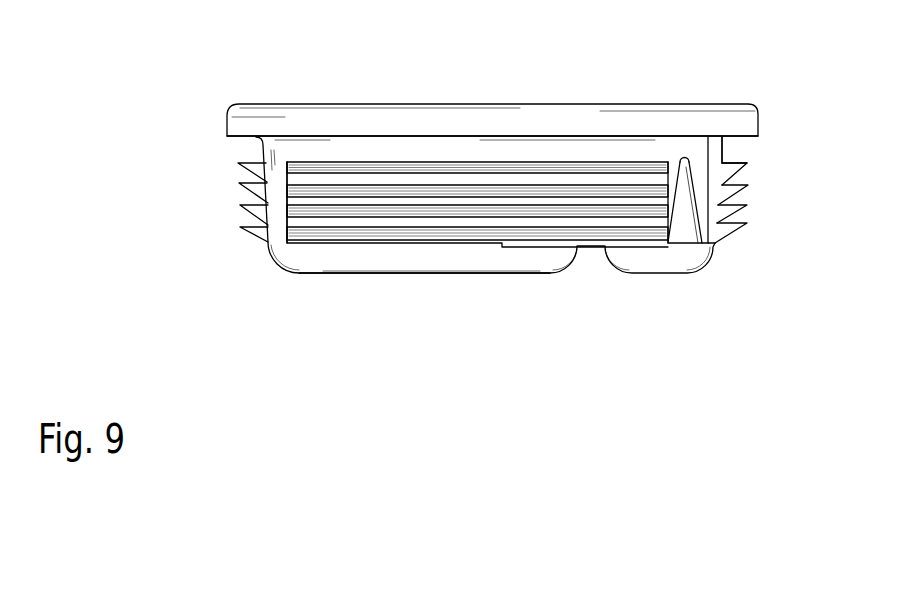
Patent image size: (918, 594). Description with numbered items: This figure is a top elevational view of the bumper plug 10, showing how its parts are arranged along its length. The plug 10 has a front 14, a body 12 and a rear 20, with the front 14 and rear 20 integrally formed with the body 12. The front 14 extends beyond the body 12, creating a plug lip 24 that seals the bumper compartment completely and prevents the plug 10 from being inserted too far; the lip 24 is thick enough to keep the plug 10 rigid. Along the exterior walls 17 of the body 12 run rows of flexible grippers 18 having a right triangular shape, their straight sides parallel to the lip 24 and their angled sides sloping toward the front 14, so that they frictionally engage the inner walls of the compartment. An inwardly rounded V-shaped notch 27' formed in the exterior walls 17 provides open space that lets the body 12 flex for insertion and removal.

The bumper plug 10 is at (139, 85).
The body 12 is at (312, 261).
The front 14 is at (644, 104).
The exterior walls 17 is at (478, 122).
The grippers 18 is at (240, 227).
The rear 20 is at (448, 276).
The plug lip 24 is at (745, 137).
The V-shaped notch 27' is at (734, 142).